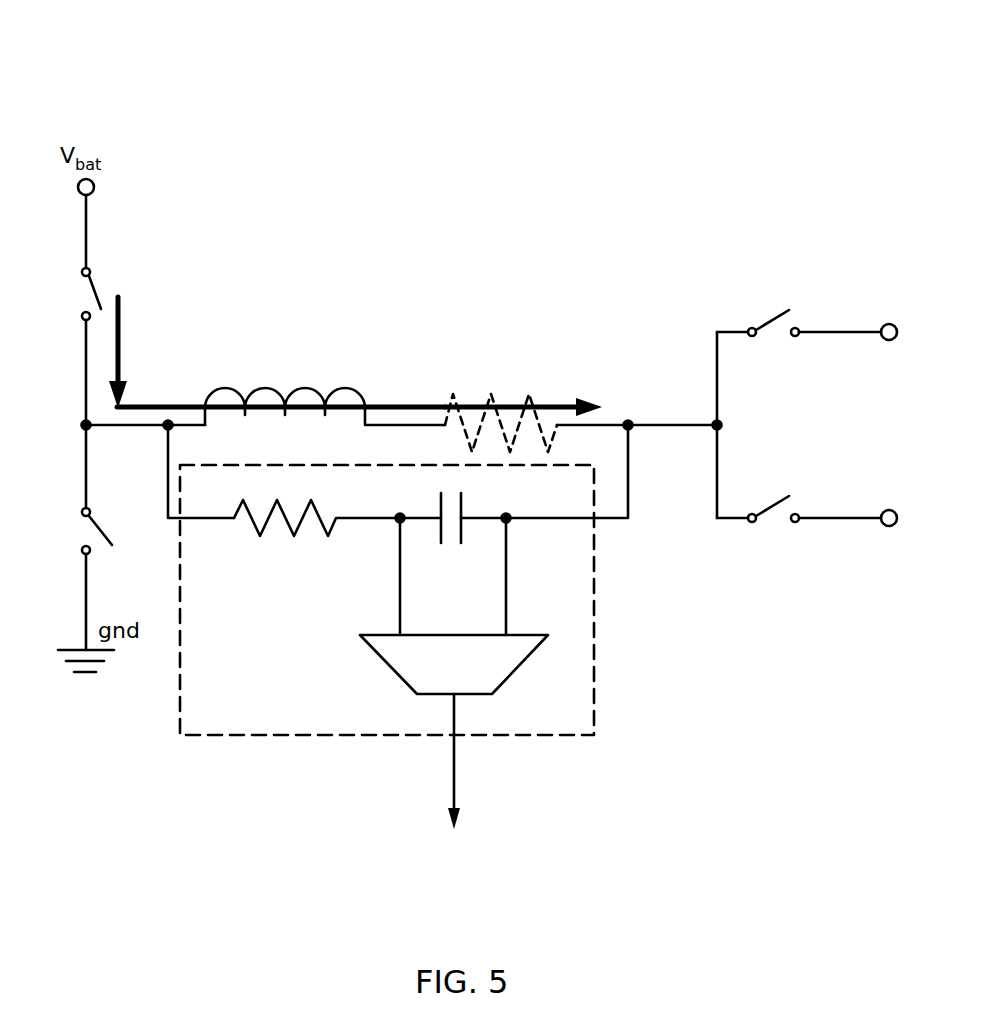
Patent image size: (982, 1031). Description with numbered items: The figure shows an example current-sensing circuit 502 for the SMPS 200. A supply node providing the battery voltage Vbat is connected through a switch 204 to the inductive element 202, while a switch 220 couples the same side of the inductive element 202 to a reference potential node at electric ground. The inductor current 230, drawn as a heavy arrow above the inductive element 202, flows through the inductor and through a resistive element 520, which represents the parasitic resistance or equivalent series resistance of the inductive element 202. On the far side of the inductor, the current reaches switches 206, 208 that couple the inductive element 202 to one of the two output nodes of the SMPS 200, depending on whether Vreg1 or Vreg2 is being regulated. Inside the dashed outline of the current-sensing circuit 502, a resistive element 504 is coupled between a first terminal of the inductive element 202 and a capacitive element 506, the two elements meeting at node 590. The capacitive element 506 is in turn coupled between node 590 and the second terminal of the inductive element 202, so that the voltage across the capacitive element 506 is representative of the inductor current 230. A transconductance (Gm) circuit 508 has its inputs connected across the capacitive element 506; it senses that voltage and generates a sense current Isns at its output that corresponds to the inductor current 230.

The SMPS 200 is at (168, 44).
The inductive element 202 is at (264, 386).
The switch 204 is at (92, 282).
The switch 206 is at (772, 318).
The switch 208 is at (772, 504).
The switch 220 is at (82, 532).
The inductor current 230 is at (134, 404).
The current-sensing circuit 502 is at (246, 738).
The resistive element 504 is at (293, 536).
The capacitive element 506 is at (463, 514).
The transconductance (Gm) circuit 508 is at (390, 672).
The resistive element 520 is at (529, 402).
The node 590 is at (400, 512).